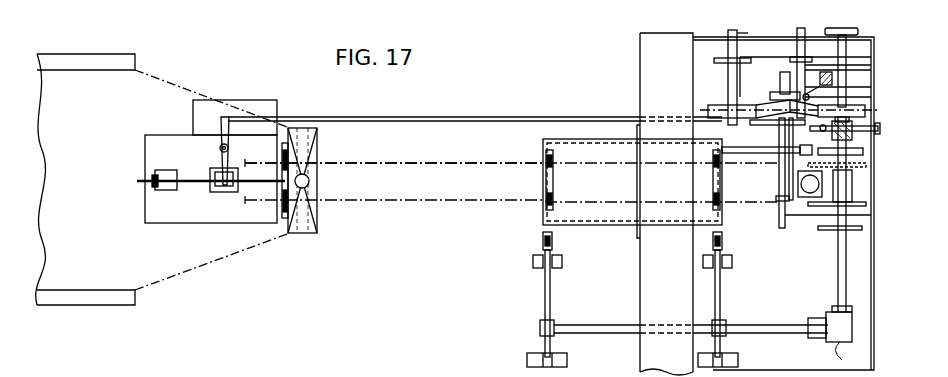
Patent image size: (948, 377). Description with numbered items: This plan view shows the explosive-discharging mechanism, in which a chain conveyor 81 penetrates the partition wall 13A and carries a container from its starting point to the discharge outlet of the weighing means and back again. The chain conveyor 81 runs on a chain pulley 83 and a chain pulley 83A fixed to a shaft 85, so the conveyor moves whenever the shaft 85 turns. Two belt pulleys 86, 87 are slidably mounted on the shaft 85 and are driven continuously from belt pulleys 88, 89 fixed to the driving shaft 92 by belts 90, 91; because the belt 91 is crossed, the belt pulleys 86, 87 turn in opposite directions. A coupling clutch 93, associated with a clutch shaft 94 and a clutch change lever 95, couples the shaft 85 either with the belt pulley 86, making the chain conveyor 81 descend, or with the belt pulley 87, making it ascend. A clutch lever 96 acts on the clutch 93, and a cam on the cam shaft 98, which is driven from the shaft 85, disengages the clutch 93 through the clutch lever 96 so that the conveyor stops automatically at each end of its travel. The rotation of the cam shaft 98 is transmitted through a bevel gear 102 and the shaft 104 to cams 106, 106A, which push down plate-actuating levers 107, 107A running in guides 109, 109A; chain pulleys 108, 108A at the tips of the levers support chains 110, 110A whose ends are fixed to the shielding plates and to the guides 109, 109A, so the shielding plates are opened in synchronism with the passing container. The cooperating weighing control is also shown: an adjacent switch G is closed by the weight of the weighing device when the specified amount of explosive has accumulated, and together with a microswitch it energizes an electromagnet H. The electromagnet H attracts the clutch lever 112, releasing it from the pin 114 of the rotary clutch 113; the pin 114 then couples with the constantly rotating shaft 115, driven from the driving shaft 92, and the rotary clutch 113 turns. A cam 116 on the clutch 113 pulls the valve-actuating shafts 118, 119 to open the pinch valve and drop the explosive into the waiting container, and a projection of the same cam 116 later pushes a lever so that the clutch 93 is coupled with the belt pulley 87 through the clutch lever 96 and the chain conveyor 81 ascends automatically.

The valve-actuating shaft 119 is at (222, 130).
The adjacent switch G is at (153, 181).
The chain conveyor 81 is at (393, 190).
The valve-actuating shaft 118 is at (461, 117).
The partition wall 13A is at (645, 57).
The belt pulley 88 is at (712, 125).
The belt pulley 89 is at (726, 112).
The driving shaft 92 is at (753, 36).
The clutch lever 112 is at (790, 78).
The pin 114 is at (784, 92).
The rotary clutch 113 is at (773, 104).
The electromagnet H is at (833, 78).
The belt pulley 87 is at (865, 111).
The coupling clutch 93 is at (850, 120).
The clutch change lever 95 is at (881, 128).
The clutch shaft 94 is at (853, 136).
The belt pulley 86 is at (863, 153).
The chain pulley 83A is at (866, 167).
The shaft 85 is at (853, 186).
The chain pulley 83 is at (866, 207).
The belt 90 is at (778, 198).
The belt 91 is at (790, 134).
The cam 116 is at (799, 173).
The clutch lever 96 is at (776, 157).
The chain 110 is at (716, 215).
The chain 110A is at (545, 212).
The chain pulley 108A is at (553, 240).
The guide 109A is at (563, 262).
The plate-actuating lever 107A is at (545, 283).
The cam 106A is at (543, 318).
The shaft 115 is at (763, 215).
The chain pulley 108 is at (722, 242).
The guide 109 is at (732, 265).
The plate-actuating lever 107 is at (720, 292).
The cam 106 is at (718, 323).
The shaft 104 is at (804, 325).
The cam shaft 98 is at (846, 265).
The bevel gear 102 is at (853, 325).